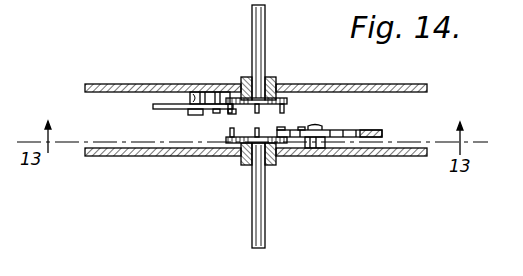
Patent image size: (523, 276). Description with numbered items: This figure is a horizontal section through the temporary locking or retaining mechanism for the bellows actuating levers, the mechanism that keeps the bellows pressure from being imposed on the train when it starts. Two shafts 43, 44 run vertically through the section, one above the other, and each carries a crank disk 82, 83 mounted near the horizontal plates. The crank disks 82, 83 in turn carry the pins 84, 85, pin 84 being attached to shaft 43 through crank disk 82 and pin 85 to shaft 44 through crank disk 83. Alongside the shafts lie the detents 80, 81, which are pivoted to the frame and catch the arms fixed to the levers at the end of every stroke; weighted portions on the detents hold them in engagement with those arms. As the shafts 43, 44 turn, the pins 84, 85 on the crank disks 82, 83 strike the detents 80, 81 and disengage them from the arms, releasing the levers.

The shaft 44 is at (263, 41).
The shaft 43 is at (258, 203).
The crank disk 83 is at (281, 94).
The crank disk 82 is at (234, 151).
The detent 81 is at (177, 107).
The pin 85 is at (232, 115).
The detent 80 is at (337, 138).
The pin 84 is at (283, 127).